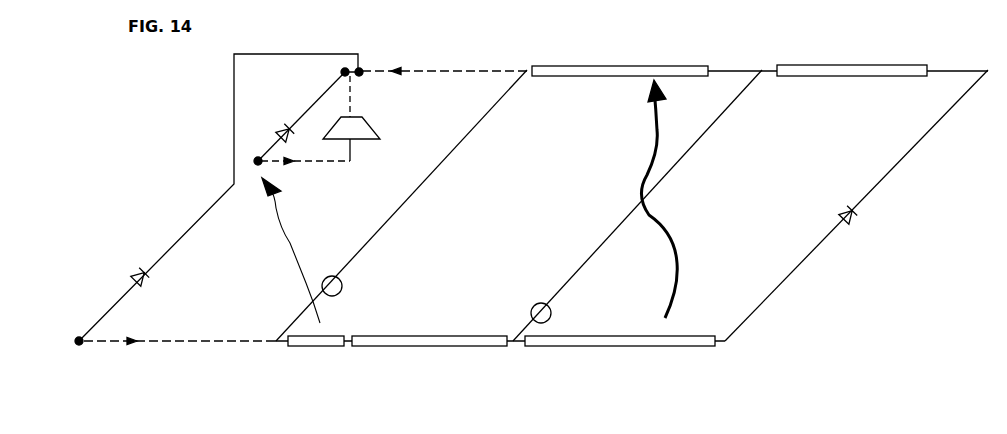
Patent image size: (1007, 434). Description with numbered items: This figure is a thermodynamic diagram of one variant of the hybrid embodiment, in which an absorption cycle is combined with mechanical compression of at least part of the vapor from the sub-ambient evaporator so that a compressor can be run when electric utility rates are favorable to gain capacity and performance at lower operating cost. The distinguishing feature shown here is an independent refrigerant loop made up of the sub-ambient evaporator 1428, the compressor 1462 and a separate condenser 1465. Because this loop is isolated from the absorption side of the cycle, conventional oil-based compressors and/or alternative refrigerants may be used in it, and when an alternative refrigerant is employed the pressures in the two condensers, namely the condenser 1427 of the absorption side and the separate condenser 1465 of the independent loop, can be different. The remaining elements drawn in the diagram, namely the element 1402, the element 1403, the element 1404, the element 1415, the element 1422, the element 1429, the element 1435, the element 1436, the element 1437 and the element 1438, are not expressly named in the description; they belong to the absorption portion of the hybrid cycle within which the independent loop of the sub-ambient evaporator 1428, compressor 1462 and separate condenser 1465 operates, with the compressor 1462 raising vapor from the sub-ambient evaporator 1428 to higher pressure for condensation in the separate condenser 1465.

The light source array segment 1402 is at (303, 347).
The light emitter 1403 is at (330, 277).
The light beam 1404 is at (279, 250).
The light emitter 1415 is at (535, 306).
The detector array segment 1422 is at (840, 65).
The condenser 1427 is at (361, 70).
The sub-ambient evaporator 1428 is at (260, 164).
The diode 1429 is at (280, 122).
The diode 1435 is at (139, 269).
The node 1436 is at (79, 337).
The array segment 1437 is at (604, 336).
The array segment 1438 is at (620, 65).
The compressor 1462 is at (382, 129).
The separate condenser 1465 is at (341, 72).